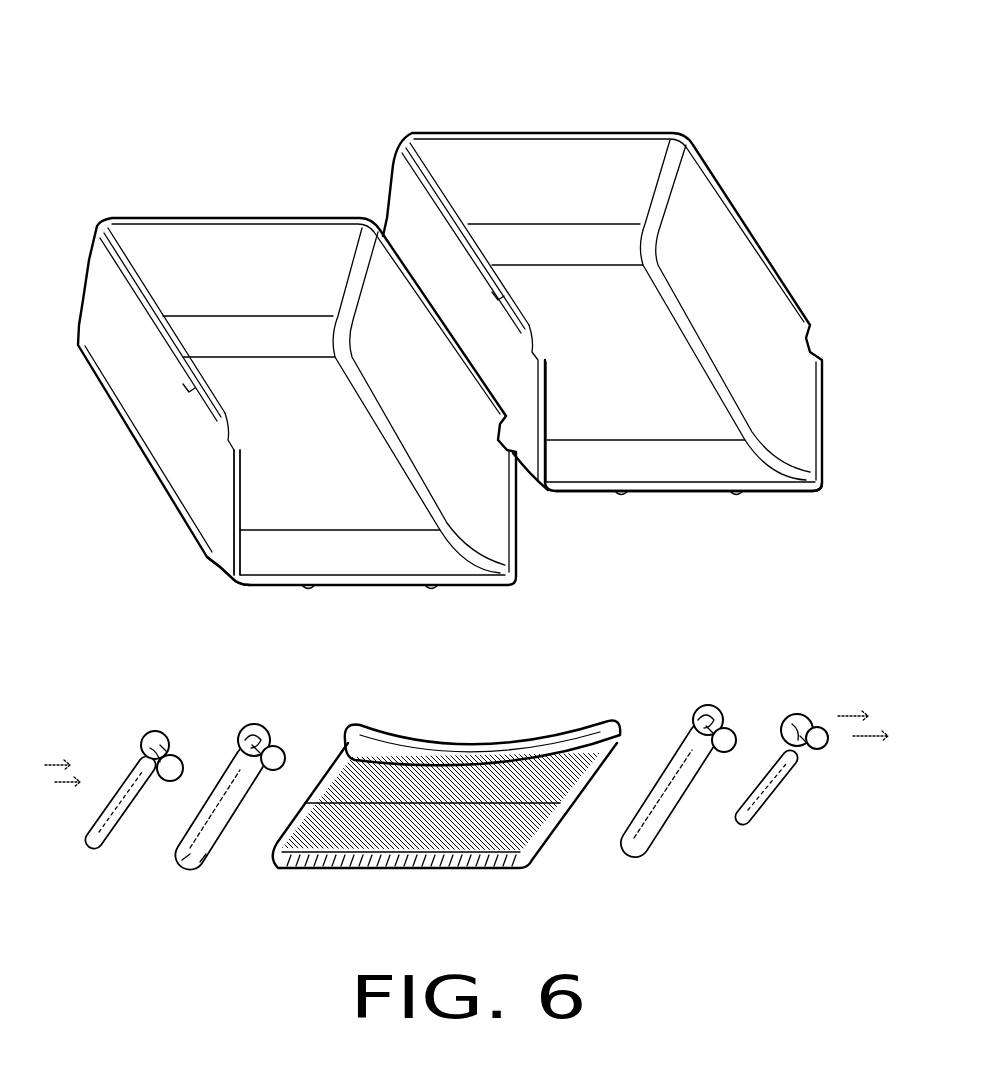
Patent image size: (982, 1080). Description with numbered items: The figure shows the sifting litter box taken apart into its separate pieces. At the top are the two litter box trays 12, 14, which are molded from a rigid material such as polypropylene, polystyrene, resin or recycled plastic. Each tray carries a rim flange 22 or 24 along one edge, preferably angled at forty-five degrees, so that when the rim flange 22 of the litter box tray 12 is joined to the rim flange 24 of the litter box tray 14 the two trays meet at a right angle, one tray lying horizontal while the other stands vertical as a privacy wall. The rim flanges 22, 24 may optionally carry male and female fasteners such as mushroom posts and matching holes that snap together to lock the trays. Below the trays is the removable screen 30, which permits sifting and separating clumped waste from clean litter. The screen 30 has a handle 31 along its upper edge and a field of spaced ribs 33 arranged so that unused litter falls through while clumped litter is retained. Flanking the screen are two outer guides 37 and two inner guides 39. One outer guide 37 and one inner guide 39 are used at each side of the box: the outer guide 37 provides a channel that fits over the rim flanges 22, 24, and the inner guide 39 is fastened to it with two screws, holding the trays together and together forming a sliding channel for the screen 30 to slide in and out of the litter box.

The litter box tray 12 is at (220, 265).
The litter box tray 14 is at (548, 200).
The rim flange 22 is at (237, 535).
The rim flange 24 is at (685, 495).
The removable screen 30 is at (436, 814).
The handle 31 is at (405, 742).
The ribs 33 is at (470, 812).
The outer guide 37 is at (127, 773).
The inner guide 39 is at (258, 735).